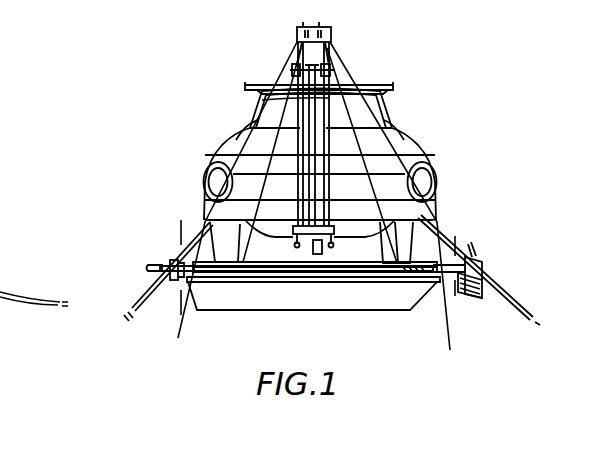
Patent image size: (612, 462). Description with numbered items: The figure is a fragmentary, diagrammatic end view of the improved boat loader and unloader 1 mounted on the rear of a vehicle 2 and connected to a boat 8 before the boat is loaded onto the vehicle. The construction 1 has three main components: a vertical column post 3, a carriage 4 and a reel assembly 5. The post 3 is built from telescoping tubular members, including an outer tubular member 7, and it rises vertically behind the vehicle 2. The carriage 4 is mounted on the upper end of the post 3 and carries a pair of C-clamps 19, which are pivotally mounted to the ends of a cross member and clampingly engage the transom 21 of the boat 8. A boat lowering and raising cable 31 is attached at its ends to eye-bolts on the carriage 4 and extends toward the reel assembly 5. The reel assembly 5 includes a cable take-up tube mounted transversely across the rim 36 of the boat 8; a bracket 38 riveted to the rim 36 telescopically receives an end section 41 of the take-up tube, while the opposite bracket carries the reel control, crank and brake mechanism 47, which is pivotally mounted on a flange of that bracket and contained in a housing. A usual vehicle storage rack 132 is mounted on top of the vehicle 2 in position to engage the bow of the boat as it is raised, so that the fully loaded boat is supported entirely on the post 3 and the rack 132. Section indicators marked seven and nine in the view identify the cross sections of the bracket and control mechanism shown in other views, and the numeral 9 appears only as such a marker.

The boat loader and unloader 1 is at (340, 50).
The vehicle 2 is at (13, 305).
The vertical column post 3 is at (320, 149).
The carriage 4 is at (294, 46).
The reel assembly 5 is at (357, 270).
The outer tubular member 7 is at (462, 230).
The boat 8 is at (143, 290).
The section line 9- 9 is at (173, 214).
The C-clamps 19 is at (330, 238).
The transom 21 is at (272, 248).
The boat lowering and raising cable 31 is at (270, 116).
The rim 36 is at (502, 300).
The bracket 38 is at (175, 262).
The end section 41 is at (160, 266).
The reel control, crank and brake mechanism 47 is at (480, 256).
The vehicle storage rack 132 is at (380, 86).